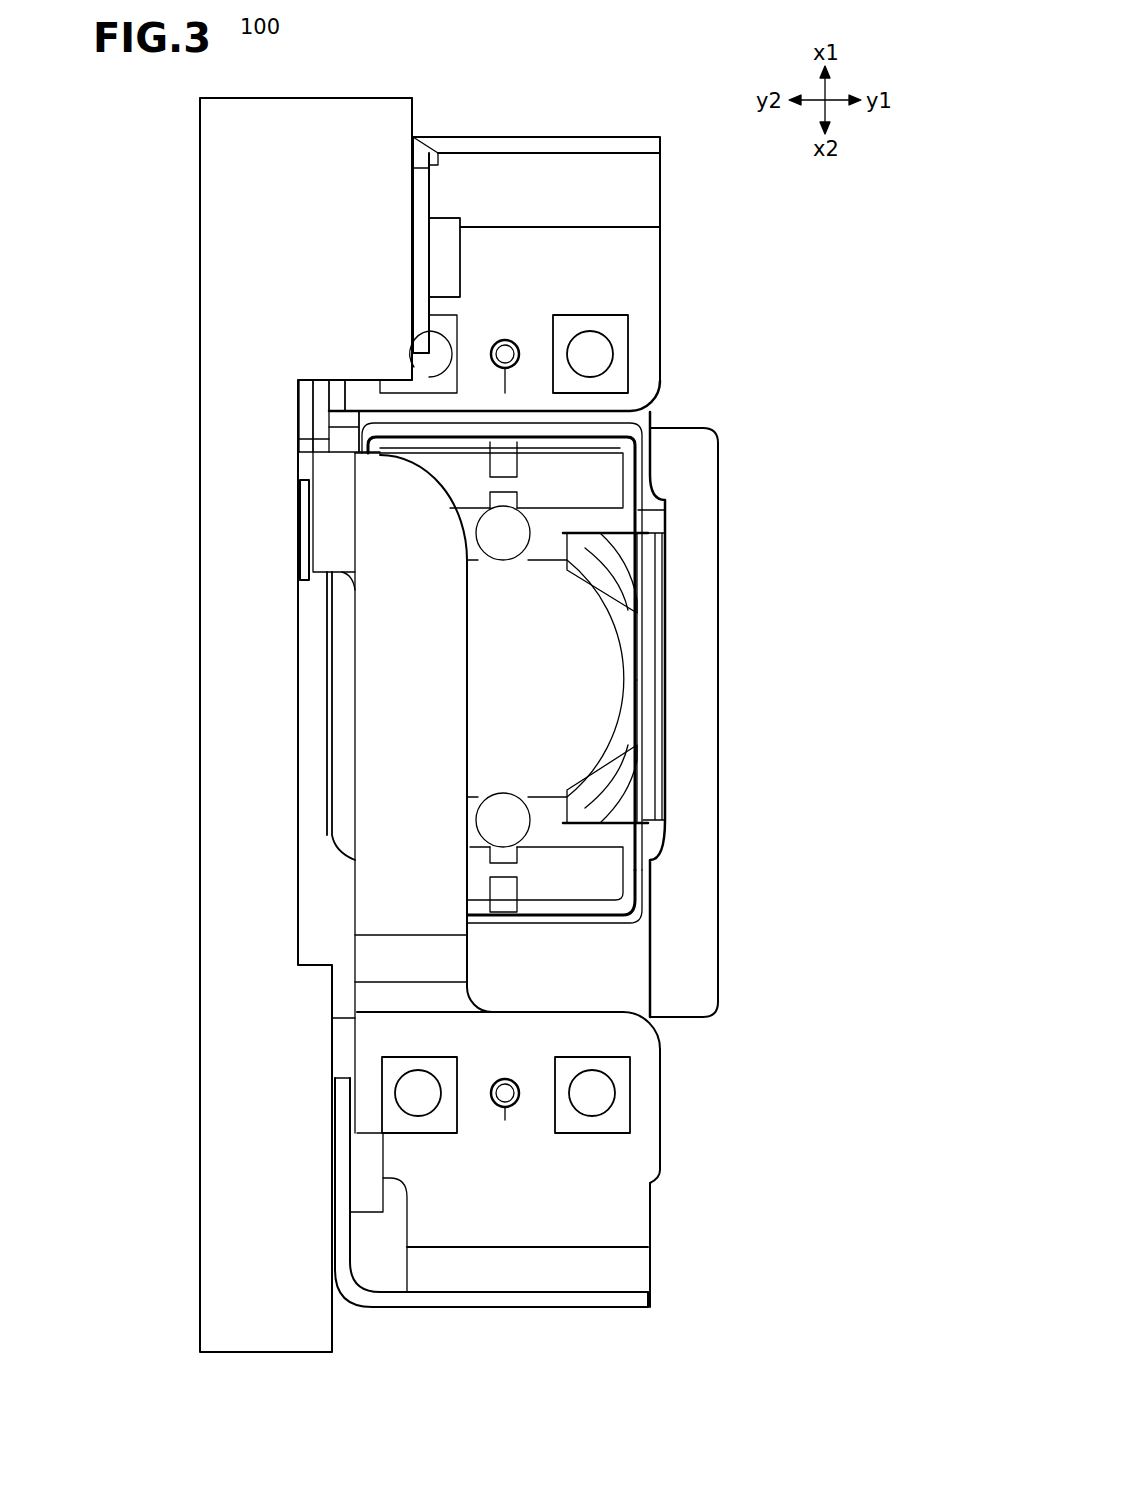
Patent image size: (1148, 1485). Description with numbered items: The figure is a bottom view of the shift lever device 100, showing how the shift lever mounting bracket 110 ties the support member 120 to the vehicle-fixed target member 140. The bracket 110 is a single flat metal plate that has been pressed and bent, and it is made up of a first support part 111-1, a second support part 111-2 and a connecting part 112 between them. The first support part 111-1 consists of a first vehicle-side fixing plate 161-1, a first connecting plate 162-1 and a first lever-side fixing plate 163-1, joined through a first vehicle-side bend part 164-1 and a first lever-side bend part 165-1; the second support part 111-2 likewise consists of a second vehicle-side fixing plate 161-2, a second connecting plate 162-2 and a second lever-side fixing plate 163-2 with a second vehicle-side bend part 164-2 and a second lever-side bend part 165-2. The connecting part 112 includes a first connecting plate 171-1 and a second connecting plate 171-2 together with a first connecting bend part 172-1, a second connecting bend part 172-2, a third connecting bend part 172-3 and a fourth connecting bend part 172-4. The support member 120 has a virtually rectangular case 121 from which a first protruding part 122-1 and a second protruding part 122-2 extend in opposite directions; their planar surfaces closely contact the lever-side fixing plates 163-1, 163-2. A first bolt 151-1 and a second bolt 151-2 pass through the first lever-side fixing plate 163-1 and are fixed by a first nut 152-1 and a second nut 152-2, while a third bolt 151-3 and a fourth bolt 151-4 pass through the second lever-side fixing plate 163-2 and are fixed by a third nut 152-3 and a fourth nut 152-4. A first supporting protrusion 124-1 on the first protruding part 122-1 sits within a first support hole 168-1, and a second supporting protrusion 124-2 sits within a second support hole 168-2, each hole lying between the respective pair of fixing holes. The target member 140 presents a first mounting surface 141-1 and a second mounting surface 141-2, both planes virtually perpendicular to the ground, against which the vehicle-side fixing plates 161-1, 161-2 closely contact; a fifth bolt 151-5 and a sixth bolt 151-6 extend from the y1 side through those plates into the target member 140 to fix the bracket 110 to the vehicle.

The shift lever device 100 is at (240, 39).
The shift lever mounting bracket 110 is at (835, 563).
The first support part 111-1 is at (655, 543).
The second support part 111-2 is at (575, 1003).
The connecting part 112 is at (422, 727).
The support member 120 is at (768, 714).
The case 121 is at (655, 525).
The first protruding part 122-1 is at (640, 422).
The second protruding part 122-2 is at (633, 985).
The first supporting protrusion 124-1 is at (505, 345).
The second supporting protrusion 124-2 is at (503, 1070).
The target member 140 is at (225, 745).
The first mounting surface 141-1 is at (414, 110).
The second mounting surface 141-2 is at (337, 1332).
The first bolt 151-1 is at (593, 343).
The second bolt 151-2 is at (420, 363).
The third bolt 151-3 is at (592, 1102).
The fourth bolt 151-4 is at (413, 1093).
The fifth bolt 151-5 is at (443, 268).
The sixth bolt 151-6 is at (363, 1193).
The first nut 152-1 is at (618, 365).
The second nut 152-2 is at (435, 328).
The third nut 152-3 is at (618, 1075).
The fourth nut 152-4 is at (390, 1080).
The first vehicle-side fixing plate 161-1 is at (420, 237).
The second vehicle-side fixing plate 161-2 is at (342, 1240).
The first connecting plate 162-1 is at (567, 145).
The second connecting plate 162-2 is at (555, 1303).
The first lever-side fixing plate 163-1 is at (625, 262).
The second lever-side fixing plate 163-2 is at (607, 1222).
The first vehicle-side bend part 164-1 is at (440, 166).
The second vehicle-side bend part 164-2 is at (357, 1283).
The first lever-side bend part 165-1 is at (632, 195).
The second lever-side bend part 165-2 is at (630, 1272).
The first support hole 168-1 is at (520, 393).
The second support hole 168-2 is at (525, 1097).
The first connecting plate 171-1 is at (316, 422).
The second connecting plate 171-2 is at (395, 655).
The first connecting bend part 172-1 is at (337, 400).
The second connecting bend part 172-2 is at (337, 533).
The third connecting bend part 172-3 is at (383, 950).
The fourth connecting bend part 172-4 is at (373, 998).